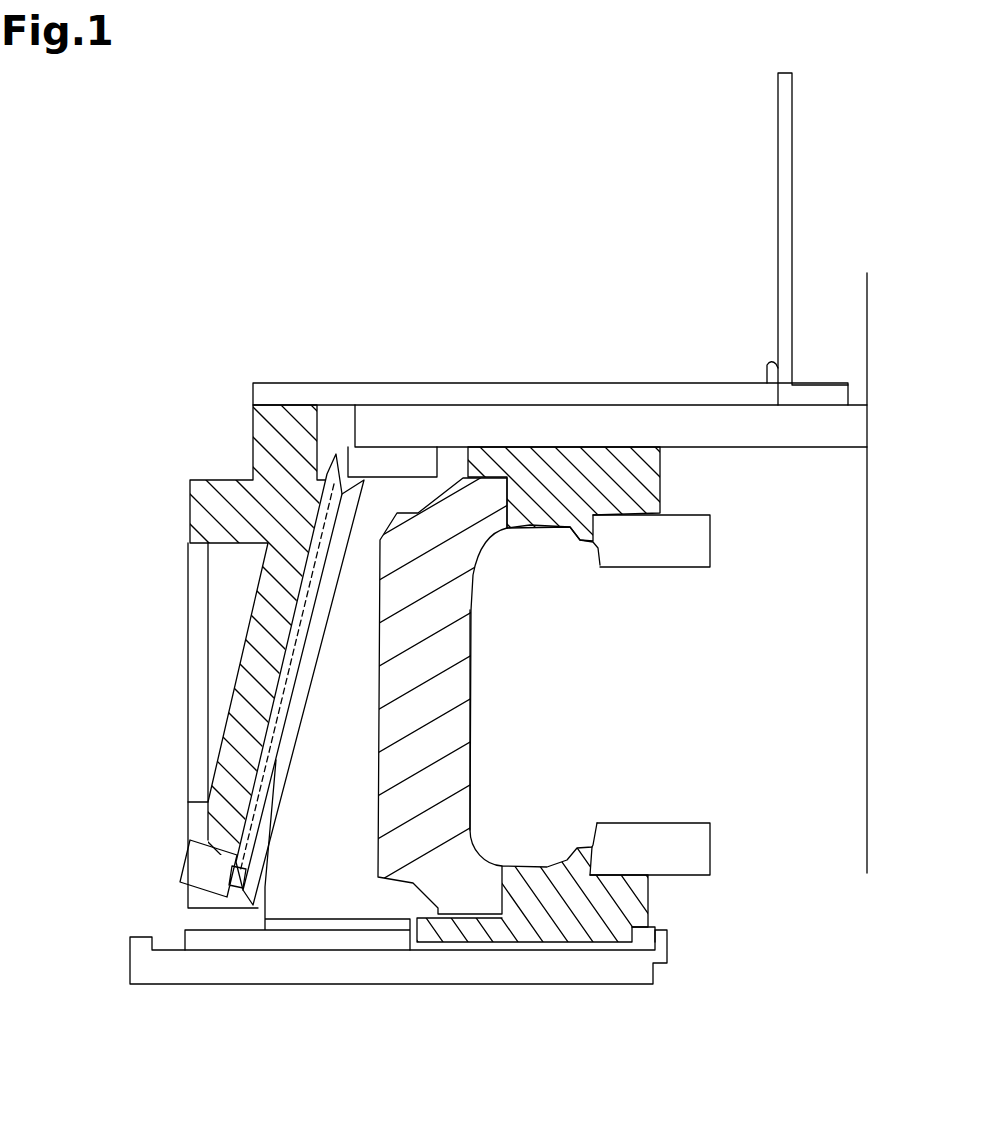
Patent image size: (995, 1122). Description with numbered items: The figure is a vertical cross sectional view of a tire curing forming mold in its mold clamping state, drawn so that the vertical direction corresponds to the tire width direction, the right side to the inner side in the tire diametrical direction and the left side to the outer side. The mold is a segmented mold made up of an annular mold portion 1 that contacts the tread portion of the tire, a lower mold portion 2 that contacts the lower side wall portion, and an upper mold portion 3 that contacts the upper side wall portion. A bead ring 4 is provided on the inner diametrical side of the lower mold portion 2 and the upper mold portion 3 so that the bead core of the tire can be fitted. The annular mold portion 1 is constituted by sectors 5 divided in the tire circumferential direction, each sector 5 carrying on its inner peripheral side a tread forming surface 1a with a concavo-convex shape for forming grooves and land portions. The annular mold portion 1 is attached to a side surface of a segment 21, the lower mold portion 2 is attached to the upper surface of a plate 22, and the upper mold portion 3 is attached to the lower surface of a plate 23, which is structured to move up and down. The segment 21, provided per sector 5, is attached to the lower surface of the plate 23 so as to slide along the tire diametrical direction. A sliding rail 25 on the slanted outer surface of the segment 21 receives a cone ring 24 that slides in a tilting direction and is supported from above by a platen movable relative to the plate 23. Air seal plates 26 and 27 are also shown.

The annular mold portion 1 is at (493, 787).
The tread forming surface 1a is at (470, 724).
The lower mold portion 2 is at (537, 927).
The upper mold portion 3 is at (568, 462).
The bead ring 4 is at (683, 553).
The sector 5 is at (463, 653).
The segment 21 is at (328, 885).
The plate 22 is at (592, 970).
The plate 23 is at (690, 415).
The cone ring 24 is at (213, 495).
The sliding rail 25 is at (272, 802).
The air seal plate 26 is at (433, 393).
The air seal plate 27 is at (790, 180).